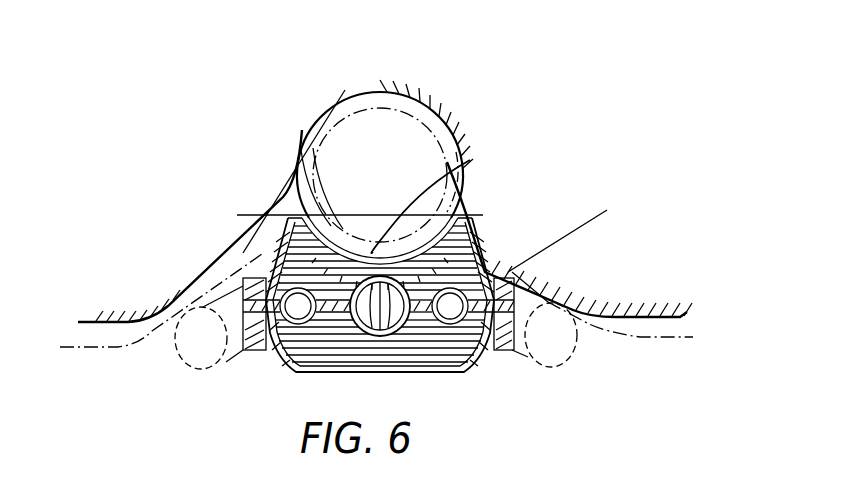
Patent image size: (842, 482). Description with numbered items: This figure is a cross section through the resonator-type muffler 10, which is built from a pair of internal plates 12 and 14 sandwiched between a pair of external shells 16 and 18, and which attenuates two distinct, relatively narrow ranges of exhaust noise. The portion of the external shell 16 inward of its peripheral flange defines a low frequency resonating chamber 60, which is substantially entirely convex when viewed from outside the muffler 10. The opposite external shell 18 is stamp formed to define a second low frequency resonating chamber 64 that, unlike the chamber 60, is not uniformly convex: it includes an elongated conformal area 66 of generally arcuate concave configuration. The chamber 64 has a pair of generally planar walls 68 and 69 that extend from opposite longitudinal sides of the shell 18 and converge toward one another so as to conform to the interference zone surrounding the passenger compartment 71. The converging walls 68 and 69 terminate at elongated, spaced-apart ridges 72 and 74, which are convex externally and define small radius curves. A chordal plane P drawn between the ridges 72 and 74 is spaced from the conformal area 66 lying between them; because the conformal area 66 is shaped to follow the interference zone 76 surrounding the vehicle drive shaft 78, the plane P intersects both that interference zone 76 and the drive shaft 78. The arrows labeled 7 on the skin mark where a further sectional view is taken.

The section line 7- 7 is at (181, 304).
The muffler 10 is at (650, 340).
The internal plate 12 is at (420, 276).
The internal plate 14 is at (405, 337).
The external shell 16 is at (419, 380).
The external shell 18 is at (288, 262).
The low frequency resonating chamber 60 is at (410, 352).
The low frequency resonating chamber 64 is at (486, 268).
The conformal area 66 is at (443, 197).
The planar wall 68 is at (270, 231).
The planar wall 69 is at (573, 228).
The passenger compartment 71 is at (681, 314).
The ridge 72 is at (276, 226).
The ridge 74 is at (447, 203).
The interference zone 76 is at (306, 131).
The drive shaft 78 is at (357, 112).
The chordal plane P is at (447, 228).